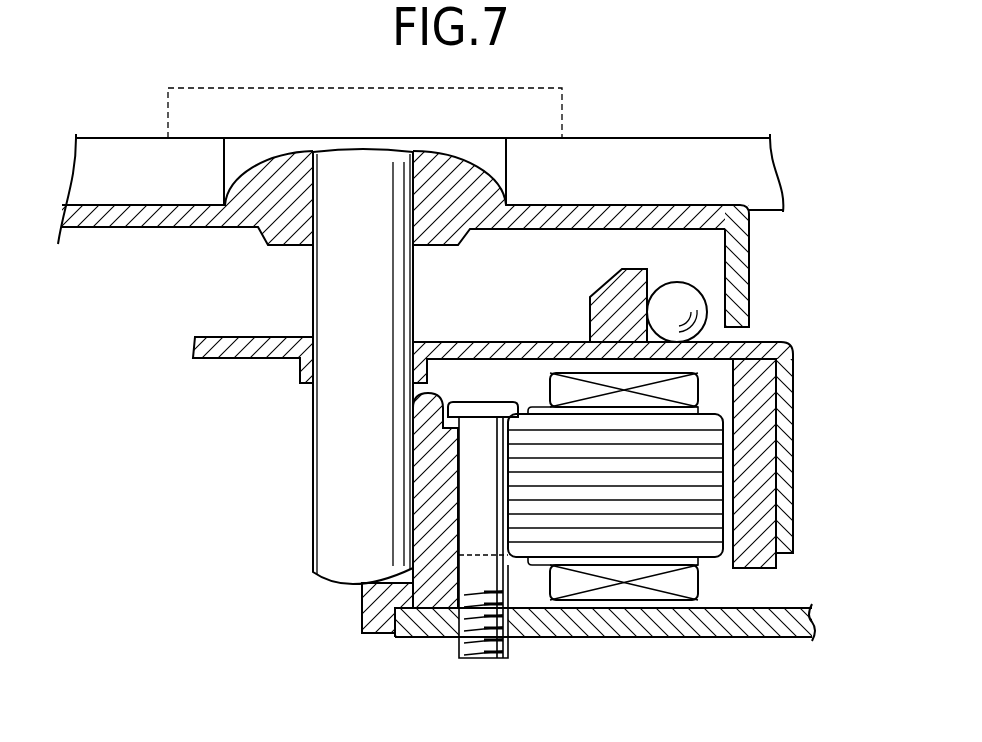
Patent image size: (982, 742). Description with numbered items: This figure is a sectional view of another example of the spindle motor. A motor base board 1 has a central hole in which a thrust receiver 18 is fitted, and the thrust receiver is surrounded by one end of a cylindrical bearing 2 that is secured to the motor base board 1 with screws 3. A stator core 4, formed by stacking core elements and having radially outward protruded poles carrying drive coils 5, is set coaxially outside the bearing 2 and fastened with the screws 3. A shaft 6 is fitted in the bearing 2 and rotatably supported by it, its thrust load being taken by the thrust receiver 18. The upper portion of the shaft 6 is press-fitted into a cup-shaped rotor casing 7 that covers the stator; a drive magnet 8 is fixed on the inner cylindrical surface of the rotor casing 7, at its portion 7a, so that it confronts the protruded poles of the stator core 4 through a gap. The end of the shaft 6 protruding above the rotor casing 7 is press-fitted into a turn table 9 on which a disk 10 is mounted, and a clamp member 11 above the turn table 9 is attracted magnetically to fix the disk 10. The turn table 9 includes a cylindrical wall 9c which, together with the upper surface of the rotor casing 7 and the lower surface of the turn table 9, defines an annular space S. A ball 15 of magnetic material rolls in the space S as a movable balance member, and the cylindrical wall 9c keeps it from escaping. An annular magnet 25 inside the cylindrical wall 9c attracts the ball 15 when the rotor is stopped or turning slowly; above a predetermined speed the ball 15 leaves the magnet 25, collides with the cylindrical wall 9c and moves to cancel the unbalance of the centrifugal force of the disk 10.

The motor base board 1 is at (614, 630).
The cylindrical bearing 2 is at (432, 401).
The screws 3 is at (472, 652).
The stator core 4 is at (710, 505).
The drive coil 5 is at (566, 390).
The shaft 6 is at (322, 474).
The rotor casing 7 is at (455, 350).
The cylindrical flange of bracket 7a is at (790, 383).
The drive magnet 8 is at (773, 448).
The turn table 9 is at (572, 215).
The cylindrical wall 9c is at (740, 260).
The disk 10 is at (727, 145).
The clamp member 11 is at (565, 107).
The ball 15 is at (694, 290).
The thrust receiver 18 is at (365, 606).
The annular magnet 25 is at (603, 290).
The annular space S is at (670, 250).